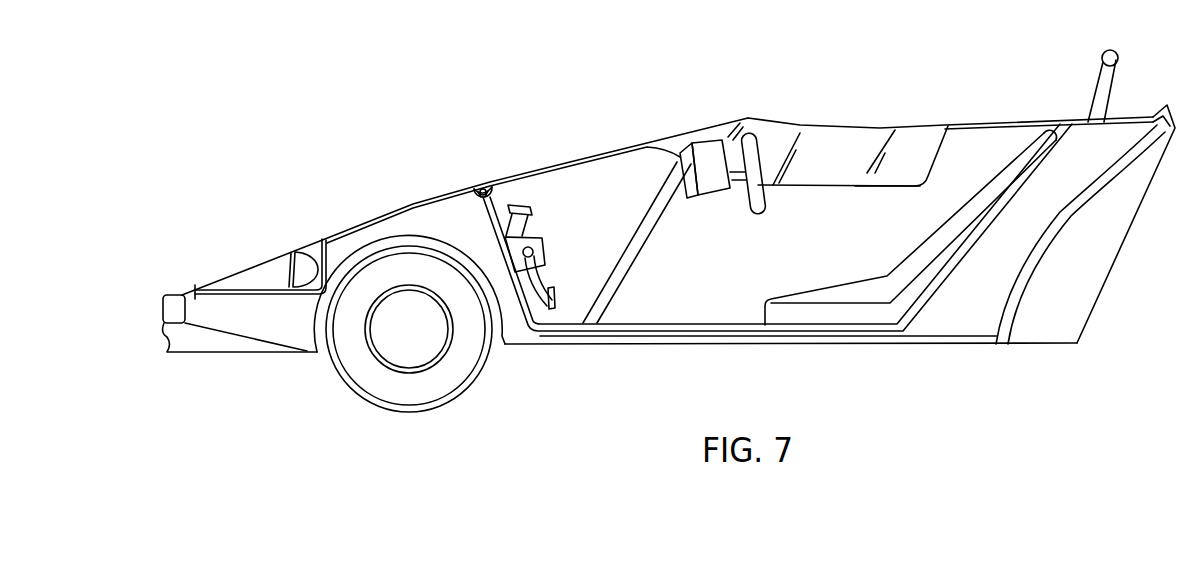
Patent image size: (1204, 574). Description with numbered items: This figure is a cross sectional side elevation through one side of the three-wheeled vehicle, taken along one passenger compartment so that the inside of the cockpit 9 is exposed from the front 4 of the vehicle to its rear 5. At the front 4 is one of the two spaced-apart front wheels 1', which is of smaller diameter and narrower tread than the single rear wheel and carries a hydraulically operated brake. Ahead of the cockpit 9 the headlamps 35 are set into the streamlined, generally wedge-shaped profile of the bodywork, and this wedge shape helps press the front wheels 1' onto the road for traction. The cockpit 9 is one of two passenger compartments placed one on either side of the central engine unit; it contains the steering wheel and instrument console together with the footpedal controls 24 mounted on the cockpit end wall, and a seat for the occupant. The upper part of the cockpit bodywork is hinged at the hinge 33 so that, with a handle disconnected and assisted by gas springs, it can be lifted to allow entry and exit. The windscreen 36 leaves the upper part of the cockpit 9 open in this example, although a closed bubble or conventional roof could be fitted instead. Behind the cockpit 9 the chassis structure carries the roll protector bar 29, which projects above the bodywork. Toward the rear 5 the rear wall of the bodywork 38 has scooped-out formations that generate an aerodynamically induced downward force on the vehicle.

The front wheel 1' is at (409, 325).
The front 4 is at (138, 339).
The rear 5 is at (1192, 270).
The passenger compartment 9 is at (863, 203).
The footpedal controls 24 is at (538, 257).
The roll protector bar 29 is at (1100, 95).
The hinge 33 is at (463, 191).
The headlamps 35 is at (275, 263).
The windscreen 36 is at (803, 140).
The rear wall of the bodywork 38 is at (1057, 242).